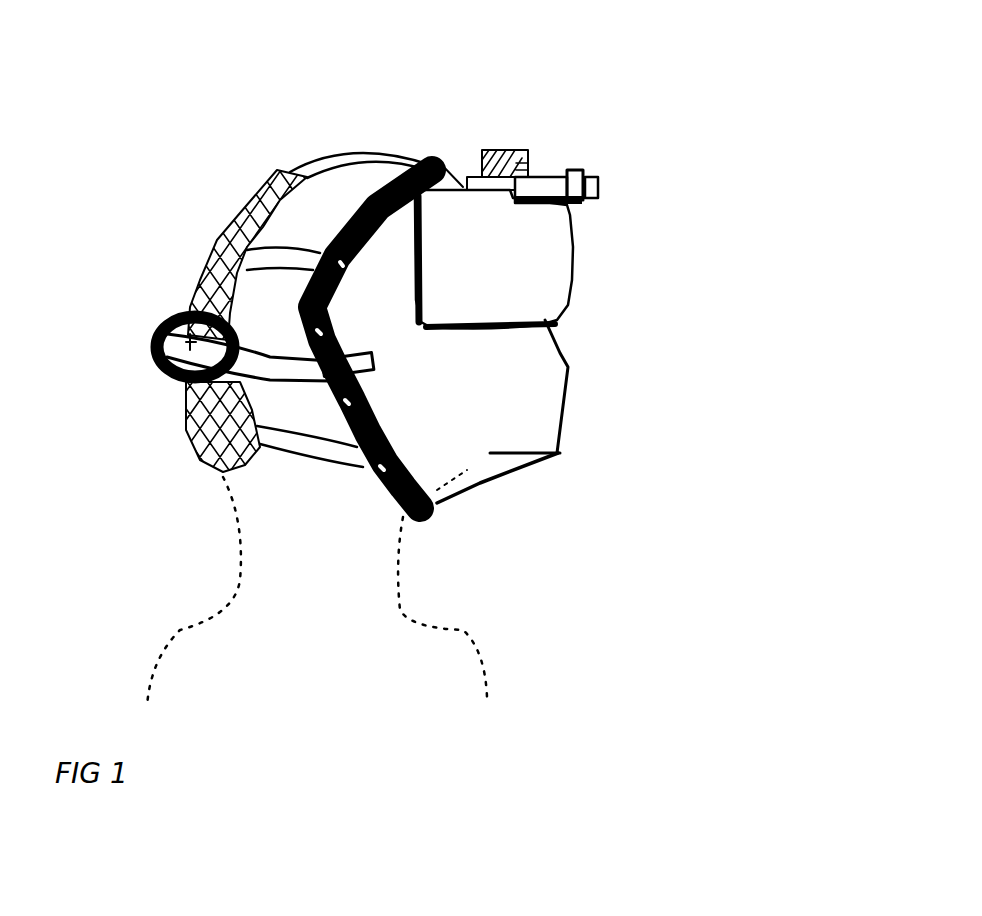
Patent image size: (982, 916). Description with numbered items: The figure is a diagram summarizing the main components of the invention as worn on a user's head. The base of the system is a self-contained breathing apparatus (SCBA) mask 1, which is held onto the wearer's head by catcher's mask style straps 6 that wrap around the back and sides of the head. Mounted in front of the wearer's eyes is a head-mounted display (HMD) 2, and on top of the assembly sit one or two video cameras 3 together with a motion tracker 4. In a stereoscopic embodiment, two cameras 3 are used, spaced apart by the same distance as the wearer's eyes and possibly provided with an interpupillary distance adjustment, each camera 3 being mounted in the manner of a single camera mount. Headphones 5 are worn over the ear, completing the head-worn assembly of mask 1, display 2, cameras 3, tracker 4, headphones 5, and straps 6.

The self-contained breathing apparatus (SCBA) mask 1 is at (487, 477).
The head-mounted display (HMD) 2 is at (540, 293).
The video camera 3 is at (580, 173).
The motion tracker 4 is at (517, 157).
The headphones 5 is at (155, 325).
The catcher's mask style straps 6 is at (273, 180).